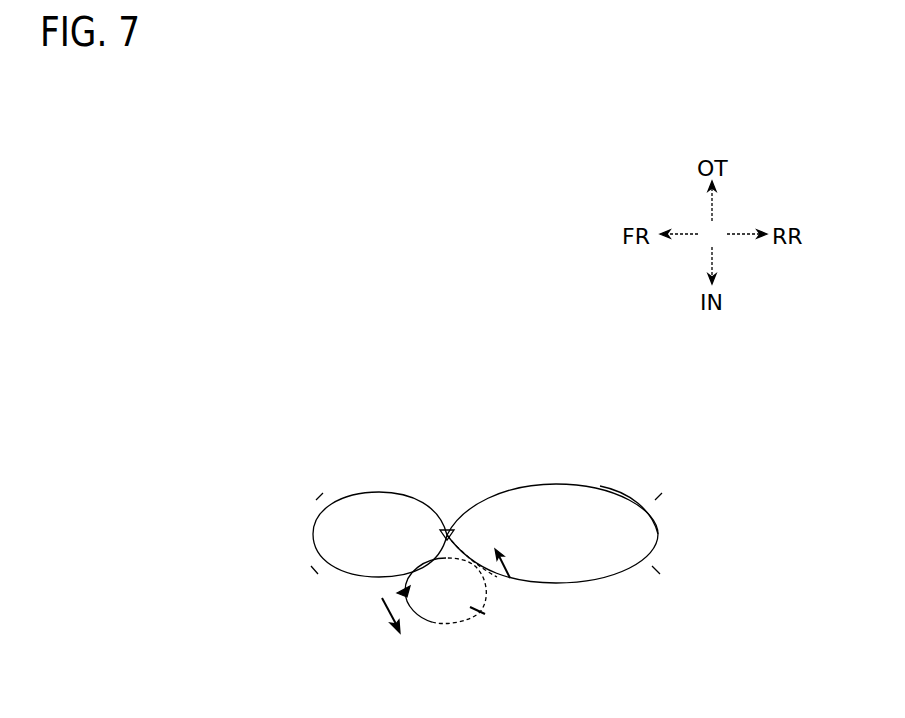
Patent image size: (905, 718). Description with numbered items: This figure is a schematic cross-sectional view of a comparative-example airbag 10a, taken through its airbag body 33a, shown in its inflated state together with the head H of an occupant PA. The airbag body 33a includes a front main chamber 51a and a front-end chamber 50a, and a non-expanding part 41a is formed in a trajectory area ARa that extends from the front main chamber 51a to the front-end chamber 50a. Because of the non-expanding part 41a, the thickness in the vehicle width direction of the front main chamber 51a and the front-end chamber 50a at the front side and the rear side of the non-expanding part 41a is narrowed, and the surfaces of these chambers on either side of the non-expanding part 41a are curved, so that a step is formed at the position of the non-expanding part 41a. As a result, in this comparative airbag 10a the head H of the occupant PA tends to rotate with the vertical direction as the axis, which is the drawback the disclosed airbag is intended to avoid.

The airbag 10a is at (487, 435).
The front-end chamber 50a is at (368, 503).
The front main chamber 51a is at (522, 503).
The airbag body 33a is at (583, 490).
The non-expanding part 41a is at (447, 527).
The head H is at (445, 625).
The trajectory area ARa is at (498, 583).
The occupant PA is at (480, 617).